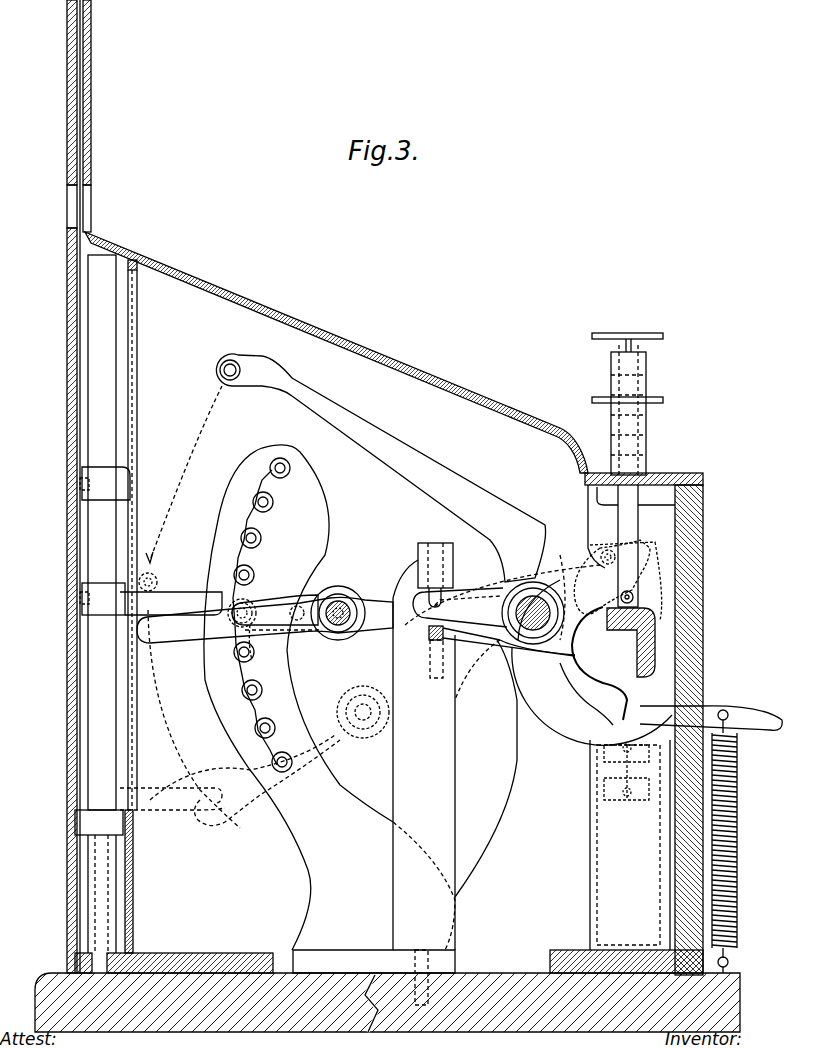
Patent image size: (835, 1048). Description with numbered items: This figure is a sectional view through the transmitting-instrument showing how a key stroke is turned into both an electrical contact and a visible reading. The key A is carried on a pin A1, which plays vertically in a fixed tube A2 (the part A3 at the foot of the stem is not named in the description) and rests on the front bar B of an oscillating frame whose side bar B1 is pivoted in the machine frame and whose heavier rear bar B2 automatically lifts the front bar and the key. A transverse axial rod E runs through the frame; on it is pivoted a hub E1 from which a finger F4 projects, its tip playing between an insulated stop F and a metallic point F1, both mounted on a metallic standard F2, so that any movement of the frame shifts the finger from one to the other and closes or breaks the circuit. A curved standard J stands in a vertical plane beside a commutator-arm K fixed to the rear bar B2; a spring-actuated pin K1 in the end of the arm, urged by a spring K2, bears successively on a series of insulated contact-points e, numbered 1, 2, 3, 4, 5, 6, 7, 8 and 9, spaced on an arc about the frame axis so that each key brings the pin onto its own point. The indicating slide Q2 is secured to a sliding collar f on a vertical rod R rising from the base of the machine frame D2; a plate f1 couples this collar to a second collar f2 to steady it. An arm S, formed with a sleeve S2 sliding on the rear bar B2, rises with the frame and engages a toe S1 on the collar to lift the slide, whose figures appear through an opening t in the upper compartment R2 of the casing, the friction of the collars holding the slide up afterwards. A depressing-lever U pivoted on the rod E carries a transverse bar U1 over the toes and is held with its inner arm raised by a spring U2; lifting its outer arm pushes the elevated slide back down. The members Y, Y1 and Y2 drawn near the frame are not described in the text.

The upper compartment of the casing R2 is at (92, 486).
The opening in the casing t is at (77, 208).
The slide Q2 is at (78, 572).
The base D2 is at (387, 752).
The vertical rod R is at (102, 604).
The coupling plate f1 is at (128, 520).
The second collar f2 is at (105, 483).
The sliding collar f is at (100, 709).
The toe S1 is at (172, 701).
The arm S is at (265, 721).
The sleeve S2 is at (338, 640).
The commutator-arm K is at (300, 600).
The spring-actuated pin K1 is at (231, 631).
The spring K2 is at (258, 612).
The curved standard J is at (230, 658).
The rear bar of the oscillating frame B2 is at (340, 604).
The hub E1 is at (505, 655).
The contact-points e is at (290, 468).
The first contact-point 1 is at (274, 764).
The second contact-point 2 is at (258, 730).
The third contact-point 3 is at (246, 691).
The fourth contact-point 4 is at (239, 654).
The fifth contact-point 5 is at (237, 613).
The sixth contact-point 6 is at (237, 576).
The seventh contact-point 7 is at (245, 538).
The eighth contact-point 8 is at (257, 500).
The ninth contact-point 9 is at (275, 463).
The transverse horizontal bar U1 is at (218, 371).
The depressing-lever U is at (499, 542).
The spring U2 is at (737, 841).
The metallic standard F2 is at (420, 755).
The metallic point F1 is at (435, 575).
The insulated stop F is at (502, 641).
The finger F4 is at (468, 600).
The axial rod E is at (533, 596).
The side bar of the oscillating frame B1 is at (555, 650).
The front bar of the oscillating frame B is at (631, 642).
The hook arm Y2 is at (593, 666).
The cam Y is at (592, 696).
The cam housing Y1 is at (621, 845).
The key A is at (632, 358).
The key pin A1 is at (636, 346).
The key tube A2 is at (655, 415).
The key shank A3 is at (624, 486).